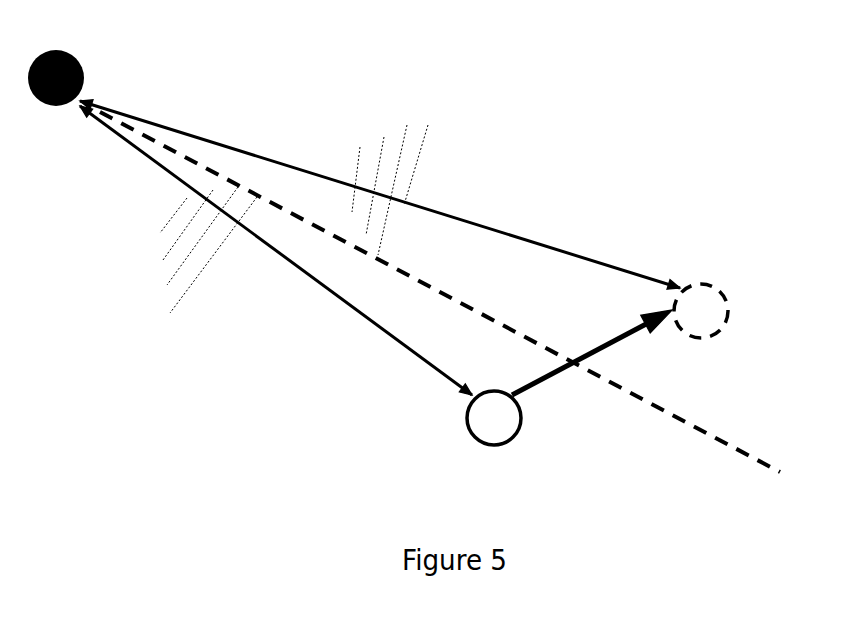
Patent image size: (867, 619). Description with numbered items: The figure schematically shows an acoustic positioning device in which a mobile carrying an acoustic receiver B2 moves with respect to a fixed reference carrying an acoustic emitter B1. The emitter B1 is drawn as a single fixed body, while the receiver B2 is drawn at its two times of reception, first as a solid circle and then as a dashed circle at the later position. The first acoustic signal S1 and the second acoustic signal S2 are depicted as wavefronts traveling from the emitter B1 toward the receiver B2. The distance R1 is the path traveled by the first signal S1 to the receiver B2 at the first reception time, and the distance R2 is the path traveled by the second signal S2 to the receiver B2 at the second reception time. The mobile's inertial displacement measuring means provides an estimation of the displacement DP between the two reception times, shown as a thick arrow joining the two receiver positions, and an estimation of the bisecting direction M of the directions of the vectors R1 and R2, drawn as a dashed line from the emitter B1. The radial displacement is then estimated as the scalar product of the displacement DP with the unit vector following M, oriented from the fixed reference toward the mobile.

The acoustic emitter B1 is at (50, 107).
The acoustic receiver B2 is at (497, 446).
The distance R1 is at (276, 250).
The distance R2 is at (380, 194).
The acoustic signal S1 is at (152, 258).
The acoustic signal S2 is at (412, 184).
The displacement DP is at (592, 350).
The bisecting direction M is at (461, 302).